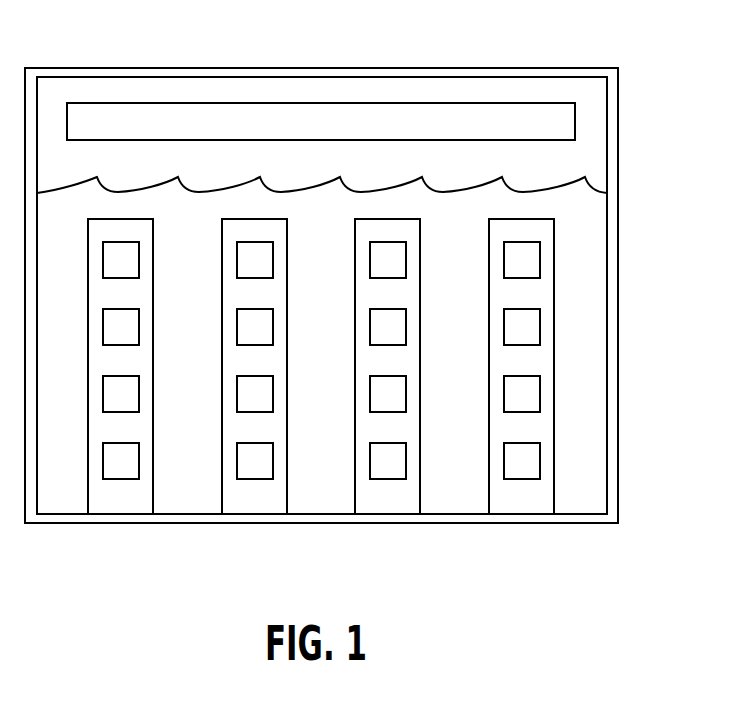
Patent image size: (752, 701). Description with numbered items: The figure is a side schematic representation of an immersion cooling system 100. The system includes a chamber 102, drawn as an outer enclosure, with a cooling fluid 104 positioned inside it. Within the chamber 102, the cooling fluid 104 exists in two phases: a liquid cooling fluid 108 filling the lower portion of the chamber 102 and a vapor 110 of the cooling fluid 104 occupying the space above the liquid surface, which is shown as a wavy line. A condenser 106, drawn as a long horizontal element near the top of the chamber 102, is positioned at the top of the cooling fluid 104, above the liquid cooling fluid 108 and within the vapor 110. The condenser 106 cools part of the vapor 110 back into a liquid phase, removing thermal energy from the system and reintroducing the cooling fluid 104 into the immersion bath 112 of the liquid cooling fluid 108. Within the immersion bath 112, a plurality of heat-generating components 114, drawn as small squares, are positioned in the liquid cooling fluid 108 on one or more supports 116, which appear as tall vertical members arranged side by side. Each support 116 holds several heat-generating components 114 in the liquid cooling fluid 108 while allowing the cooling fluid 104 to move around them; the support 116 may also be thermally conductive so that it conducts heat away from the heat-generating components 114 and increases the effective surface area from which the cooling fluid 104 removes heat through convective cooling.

The immersion cooling system 100 is at (656, 91).
The chamber 102 is at (618, 244).
The cooling fluid 104 is at (593, 155).
The condenser 106 is at (462, 123).
The liquid cooling fluid 108 is at (585, 380).
The vapor 110 is at (336, 170).
The immersion bath 112 is at (597, 320).
The heat-generating components 114 is at (520, 468).
The support 116 is at (532, 425).